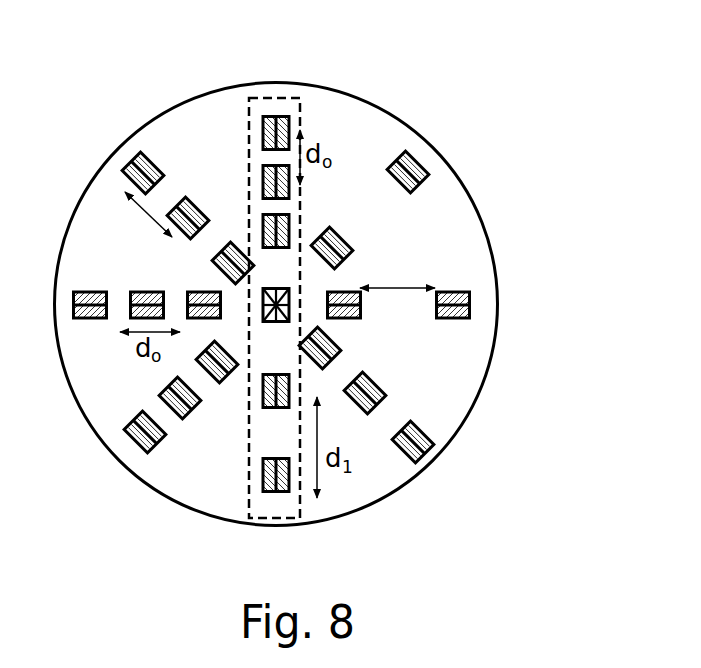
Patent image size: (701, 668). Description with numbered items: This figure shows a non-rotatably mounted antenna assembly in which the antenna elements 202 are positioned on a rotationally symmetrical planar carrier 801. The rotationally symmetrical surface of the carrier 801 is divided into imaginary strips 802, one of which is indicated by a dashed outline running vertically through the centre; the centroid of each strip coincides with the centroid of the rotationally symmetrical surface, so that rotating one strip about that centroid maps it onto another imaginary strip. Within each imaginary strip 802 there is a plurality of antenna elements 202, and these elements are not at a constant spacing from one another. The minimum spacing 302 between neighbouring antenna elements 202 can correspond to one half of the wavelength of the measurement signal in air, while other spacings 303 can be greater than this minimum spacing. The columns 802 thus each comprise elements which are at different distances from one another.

The rotationally symmetrical planar carrier 801 is at (388, 113).
The imaginary strip 802 is at (275, 98).
The antenna element 202 is at (470, 305).
The minimum spacing d0 302 is at (128, 207).
The spacing d1 303 is at (408, 286).